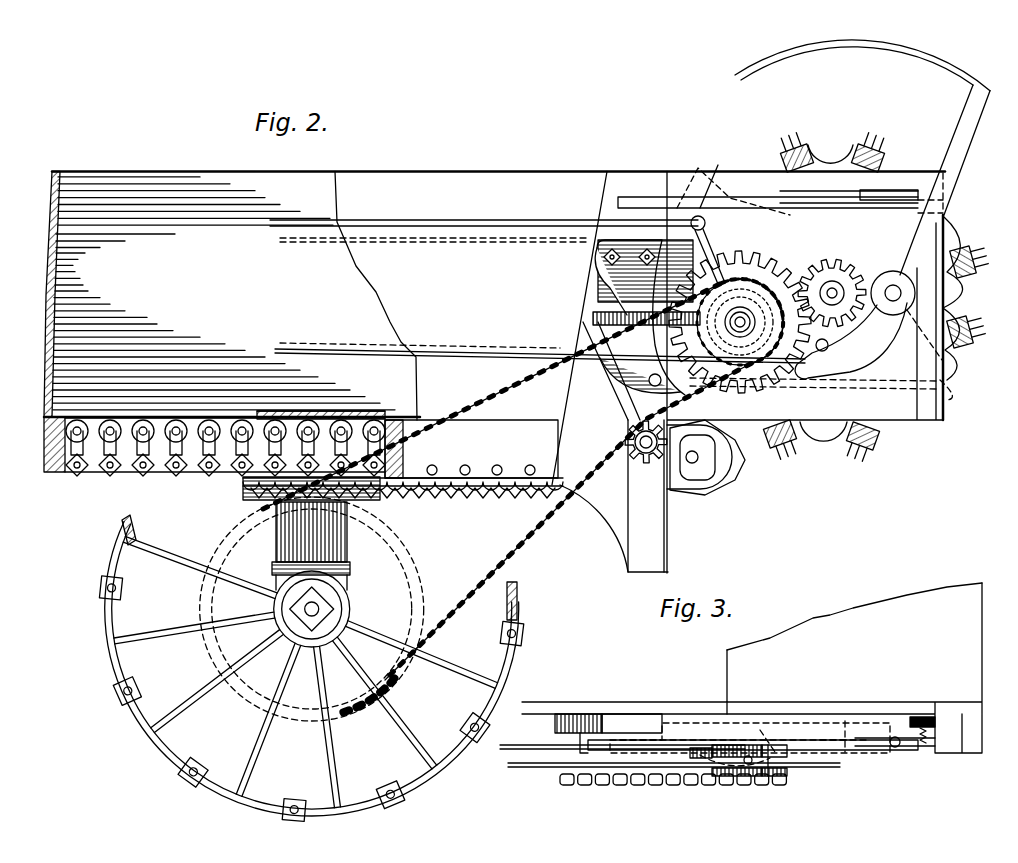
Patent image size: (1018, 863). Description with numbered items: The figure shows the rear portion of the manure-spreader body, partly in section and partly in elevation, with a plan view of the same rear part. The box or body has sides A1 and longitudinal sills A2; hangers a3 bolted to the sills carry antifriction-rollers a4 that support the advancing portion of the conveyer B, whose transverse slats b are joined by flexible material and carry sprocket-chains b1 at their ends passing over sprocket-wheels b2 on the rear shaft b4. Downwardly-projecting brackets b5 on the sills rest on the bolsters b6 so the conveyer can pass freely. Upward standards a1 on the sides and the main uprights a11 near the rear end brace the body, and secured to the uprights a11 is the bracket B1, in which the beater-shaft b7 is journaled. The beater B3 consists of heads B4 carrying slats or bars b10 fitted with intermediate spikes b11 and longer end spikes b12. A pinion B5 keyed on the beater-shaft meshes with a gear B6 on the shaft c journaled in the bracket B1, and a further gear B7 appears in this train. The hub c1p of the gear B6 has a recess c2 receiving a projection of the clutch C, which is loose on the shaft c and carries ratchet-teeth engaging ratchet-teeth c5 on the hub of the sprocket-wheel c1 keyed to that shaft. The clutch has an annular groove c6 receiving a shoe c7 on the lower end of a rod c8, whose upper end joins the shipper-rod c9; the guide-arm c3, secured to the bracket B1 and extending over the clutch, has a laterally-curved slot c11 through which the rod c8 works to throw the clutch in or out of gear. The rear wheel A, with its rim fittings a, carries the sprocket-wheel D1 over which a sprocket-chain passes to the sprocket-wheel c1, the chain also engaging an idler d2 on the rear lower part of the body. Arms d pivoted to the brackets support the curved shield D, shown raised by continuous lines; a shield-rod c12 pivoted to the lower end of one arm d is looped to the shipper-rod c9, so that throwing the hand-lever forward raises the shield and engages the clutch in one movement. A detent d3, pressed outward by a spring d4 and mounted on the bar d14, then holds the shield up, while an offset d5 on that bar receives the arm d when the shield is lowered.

In FIG. 2, the driving wheel A is at (108, 640).
In FIG. 3, the driving wheel A is at (905, 712).
In FIG. 2, the sides of the body A1 is at (494, 329).
In FIG. 2, the sills A2 is at (400, 506).
In FIG. 2, the rim clamp a is at (126, 692).
In FIG. 3, the upward standards a1 is at (585, 786).
In FIG. 2, the hangers a3 is at (90, 470).
In FIG. 2, the antifriction-rollers a4 is at (237, 418).
In FIG. 2, the main uprights a11 is at (614, 494).
In FIG. 3, the main uprights a11 is at (618, 713).
In FIG. 2, the conveyer B is at (340, 414).
In FIG. 2, the bracket B1 is at (840, 270).
In FIG. 3, the bracket B1 is at (588, 744).
In FIG. 2, the beater B3 is at (938, 296).
In FIG. 2, the wheels or heads B4 is at (970, 245).
In FIG. 2, the pinion B5 is at (855, 325).
In FIG. 3, the pinion B5 is at (843, 720).
In FIG. 2, the gear B6 is at (722, 262).
In FIG. 3, the gear B6 is at (740, 722).
In FIG. 2, the gear B7 is at (852, 285).
In FIG. 2, the transverse slats b is at (300, 412).
In FIG. 2, the sprocket-chains b1 is at (490, 494).
In FIG. 2, the sprocket-wheels b2 is at (730, 478).
In FIG. 2, the shaft b4 is at (692, 465).
In FIG. 2, the downwardly-projecting brackets b5 is at (243, 488).
In FIG. 2, the bolsters b6 is at (311, 546).
In FIG. 2, the beater-shaft b7 is at (855, 302).
In FIG. 2, the slats or bars b10 is at (967, 340).
In FIG. 2, the teeth or spikes b11 is at (866, 150).
In FIG. 2, the end spikes b12 is at (800, 148).
In FIG. 2, the clutch C is at (740, 322).
In FIG. 3, the clutch C is at (787, 762).
In FIG. 2, the shaft c is at (740, 322).
In FIG. 3, the sprocket-wheel c1 is at (730, 778).
In FIG. 3, the hub of the gear c1p is at (767, 731).
In FIG. 3, the recess c2 is at (745, 731).
In FIG. 2, the guide-arm c3 is at (646, 306).
In FIG. 3, the guide-arm c3 is at (655, 724).
In FIG. 3, the ratchet-teeth c5 is at (720, 770).
In FIG. 3, the annular groove c6 is at (772, 778).
In FIG. 3, the shoe c7 is at (748, 766).
In FIG. 2, the rod c8 is at (644, 317).
In FIG. 3, the rod c8 is at (690, 760).
In FIG. 2, the shipper-rod c9 is at (520, 220).
In FIG. 3, the shipper-rod c9 is at (505, 748).
In FIG. 3, the laterally-curved slot c11 is at (782, 770).
In FIG. 2, the shield-rod c12 is at (515, 352).
In FIG. 3, the shield-rod c12 is at (518, 768).
In FIG. 2, the curved shield D is at (827, 47).
In FIG. 2, the sprocket-wheel D1 is at (225, 540).
In FIG. 2, the arms d is at (572, 538).
In FIG. 2, the idler d2 is at (644, 458).
In FIG. 2, the detent d3 is at (880, 190).
In FIG. 3, the detent d3 is at (893, 748).
In FIG. 3, the spring d4 is at (923, 746).
In FIG. 2, the offset d5 is at (738, 200).
In FIG. 3, the offset d5 is at (786, 735).
In FIG. 2, the bar or piece d14 is at (657, 245).
In FIG. 3, the bar or piece d14 is at (762, 728).